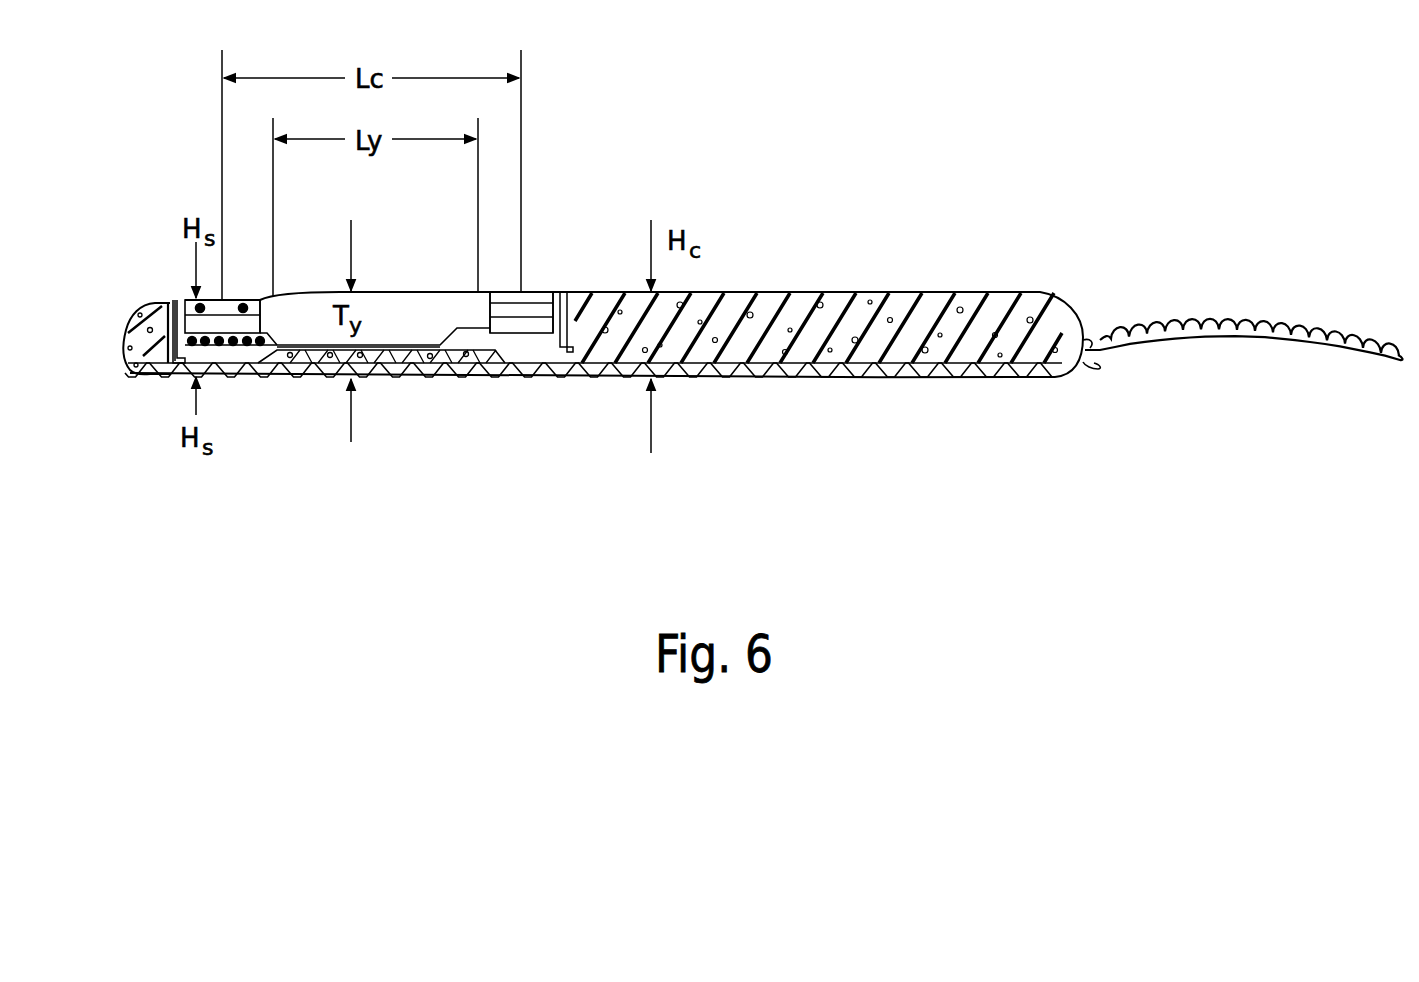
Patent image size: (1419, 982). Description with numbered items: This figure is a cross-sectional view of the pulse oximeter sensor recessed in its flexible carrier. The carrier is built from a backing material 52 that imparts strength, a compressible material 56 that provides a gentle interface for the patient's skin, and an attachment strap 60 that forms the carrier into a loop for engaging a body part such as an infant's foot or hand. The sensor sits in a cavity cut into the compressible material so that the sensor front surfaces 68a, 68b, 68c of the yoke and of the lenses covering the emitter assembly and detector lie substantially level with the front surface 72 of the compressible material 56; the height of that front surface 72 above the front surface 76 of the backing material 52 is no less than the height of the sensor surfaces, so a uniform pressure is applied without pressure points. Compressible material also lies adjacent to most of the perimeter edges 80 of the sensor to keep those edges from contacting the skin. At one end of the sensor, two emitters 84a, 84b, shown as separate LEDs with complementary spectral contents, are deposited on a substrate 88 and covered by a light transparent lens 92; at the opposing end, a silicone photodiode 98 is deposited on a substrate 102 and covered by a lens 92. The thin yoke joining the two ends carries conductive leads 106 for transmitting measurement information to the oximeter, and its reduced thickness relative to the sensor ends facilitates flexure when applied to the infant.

The backing material 52 is at (740, 380).
The compressible material 56 is at (973, 296).
The attachment strap 60 is at (1208, 337).
The front surface of the yoke 68a is at (240, 300).
The front surface of the lens covering the detector 68b is at (522, 330).
The front surface of the lens covering the emitter assembly 68c is at (373, 292).
The front surface of the compressible material 72 is at (833, 295).
The front surface of the backing material 76 is at (832, 380).
The perimeter edges of the sensor 80 is at (176, 298).
The emitter 84a is at (198, 363).
The emitter 84b is at (242, 312).
The substrate 88 is at (202, 312).
The light transparent lens 92 is at (264, 302).
The silicone photodiode 98 is at (498, 336).
The substrate 102 is at (530, 334).
The conductive leads 106 is at (407, 360).